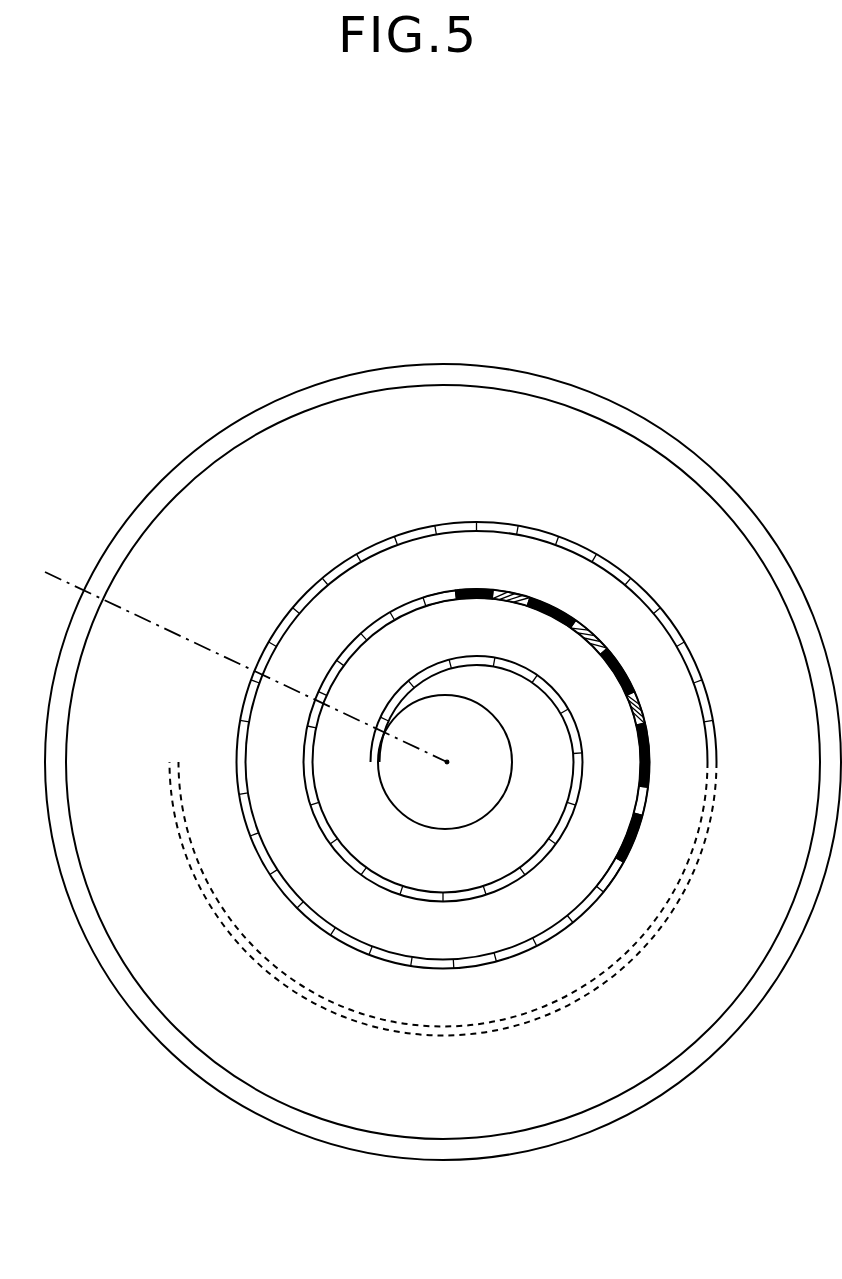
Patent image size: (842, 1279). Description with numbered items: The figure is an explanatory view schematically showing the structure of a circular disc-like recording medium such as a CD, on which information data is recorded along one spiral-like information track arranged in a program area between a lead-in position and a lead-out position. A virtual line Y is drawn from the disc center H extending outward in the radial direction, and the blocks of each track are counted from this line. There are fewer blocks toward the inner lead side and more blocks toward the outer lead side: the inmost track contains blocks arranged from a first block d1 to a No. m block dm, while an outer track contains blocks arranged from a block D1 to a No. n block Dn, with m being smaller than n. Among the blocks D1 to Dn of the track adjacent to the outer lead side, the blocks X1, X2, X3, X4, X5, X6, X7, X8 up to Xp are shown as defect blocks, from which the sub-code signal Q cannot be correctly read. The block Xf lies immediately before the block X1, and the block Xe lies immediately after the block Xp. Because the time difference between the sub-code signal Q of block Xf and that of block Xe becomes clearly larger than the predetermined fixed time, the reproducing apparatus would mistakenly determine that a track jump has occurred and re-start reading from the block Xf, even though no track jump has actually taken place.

The virtual line Y is at (62, 572).
The disc center (rotation axis) H is at (458, 763).
The block Xf is at (433, 588).
The block X1 is at (468, 588).
The block X2 is at (523, 592).
The block X3 is at (580, 600).
The block X4 is at (618, 628).
The block X5 is at (650, 665).
The block X6 is at (642, 712).
The block X7 is at (650, 757).
The block X8 is at (660, 795).
The block Xp is at (636, 835).
The block Xe is at (622, 868).
The block D1 is at (465, 759).
The first block d1 is at (386, 694).
The No. n block Dn is at (240, 693).
The No. m block dm is at (465, 759).